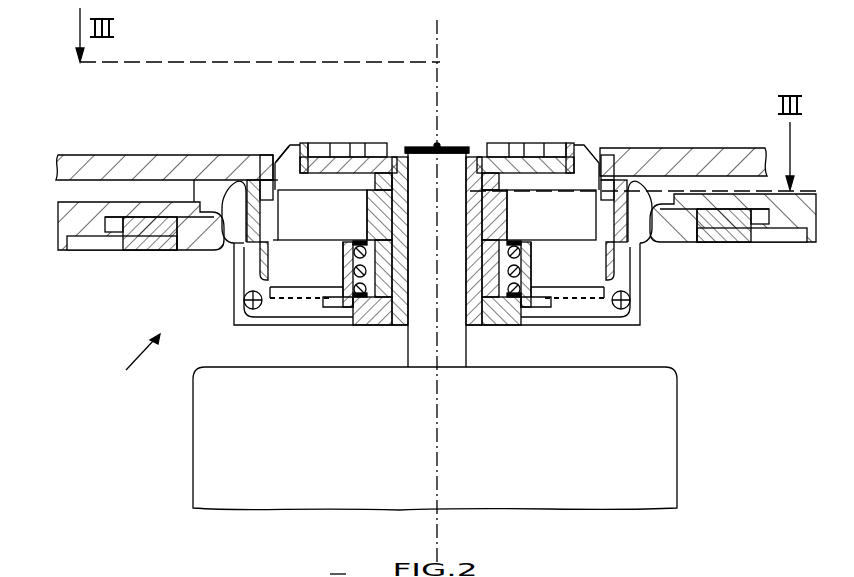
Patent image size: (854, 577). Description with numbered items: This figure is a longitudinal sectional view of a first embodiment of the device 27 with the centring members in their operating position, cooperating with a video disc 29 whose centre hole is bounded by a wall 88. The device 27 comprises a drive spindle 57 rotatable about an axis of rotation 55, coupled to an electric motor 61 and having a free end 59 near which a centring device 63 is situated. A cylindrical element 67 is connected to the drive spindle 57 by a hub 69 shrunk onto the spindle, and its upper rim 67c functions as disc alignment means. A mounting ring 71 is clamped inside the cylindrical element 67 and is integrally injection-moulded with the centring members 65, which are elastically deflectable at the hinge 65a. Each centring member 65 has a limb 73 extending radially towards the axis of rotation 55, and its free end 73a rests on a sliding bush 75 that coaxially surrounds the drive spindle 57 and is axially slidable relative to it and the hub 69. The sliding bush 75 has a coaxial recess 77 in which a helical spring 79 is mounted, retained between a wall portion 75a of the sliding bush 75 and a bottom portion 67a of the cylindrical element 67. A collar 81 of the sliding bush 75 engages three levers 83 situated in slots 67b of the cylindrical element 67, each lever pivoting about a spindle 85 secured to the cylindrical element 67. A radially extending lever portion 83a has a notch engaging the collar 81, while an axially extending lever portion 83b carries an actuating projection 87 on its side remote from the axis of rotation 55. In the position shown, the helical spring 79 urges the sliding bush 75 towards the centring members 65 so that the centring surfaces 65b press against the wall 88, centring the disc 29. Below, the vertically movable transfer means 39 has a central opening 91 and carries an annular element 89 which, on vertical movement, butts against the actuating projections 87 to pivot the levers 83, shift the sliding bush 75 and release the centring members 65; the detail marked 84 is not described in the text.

The device 27 is at (120, 388).
The video disc 29 is at (106, 166).
The transfer means 39 is at (88, 222).
The axis of rotation 55 is at (443, 58).
The drive spindle 57 is at (455, 310).
The free end 59 is at (452, 145).
The electric motor 61 is at (210, 453).
The centring device 63 is at (381, 140).
The centring members 65 is at (292, 160).
The hinge 65a is at (275, 240).
The centring surfaces 65b is at (290, 192).
The cylindrical element 67 is at (242, 181).
The bottom portion 67a is at (374, 310).
The slots 67b is at (262, 260).
The upper rim 67c is at (266, 155).
The hub 69 is at (404, 272).
The mounting ring 71 is at (284, 243).
The limb 73 is at (357, 180).
The free end 73a is at (462, 194).
The sliding bush 75 is at (398, 222).
The wall portion 75a is at (361, 237).
The coaxial recess 77 is at (373, 262).
The helical spring 79 is at (350, 258).
The collar 81 is at (345, 310).
The levers 83 is at (238, 322).
The lever portion 83a is at (298, 305).
The lever portion 83b is at (245, 282).
The chamfer 84 is at (283, 150).
The spindle 85 is at (252, 326).
The actuating projection 87 is at (232, 205).
The wall 88 is at (278, 160).
The annular element 89 is at (136, 232).
The central opening 91 is at (194, 220).